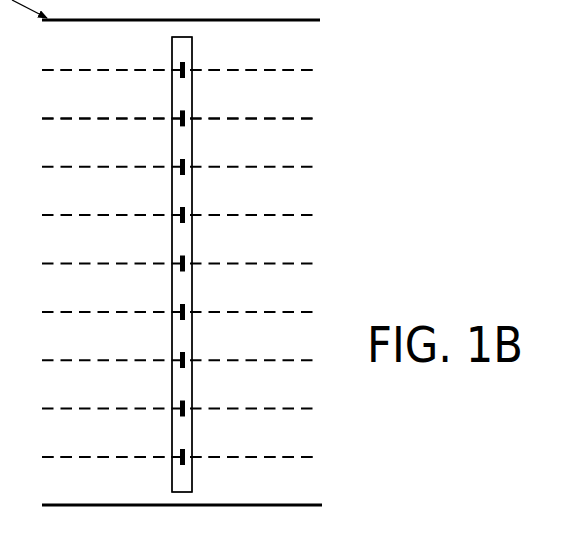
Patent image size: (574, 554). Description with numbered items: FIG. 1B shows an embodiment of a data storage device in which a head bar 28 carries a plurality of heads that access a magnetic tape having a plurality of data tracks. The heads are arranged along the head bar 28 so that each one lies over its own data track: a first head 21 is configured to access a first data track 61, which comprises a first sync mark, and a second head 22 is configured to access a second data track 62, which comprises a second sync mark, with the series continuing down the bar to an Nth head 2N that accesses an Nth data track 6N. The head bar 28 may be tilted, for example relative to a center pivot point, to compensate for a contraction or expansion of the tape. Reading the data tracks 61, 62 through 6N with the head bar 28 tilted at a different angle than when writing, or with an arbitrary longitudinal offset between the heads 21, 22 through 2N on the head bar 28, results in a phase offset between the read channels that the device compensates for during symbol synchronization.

The head bar 28 is at (170, 57).
The first head 21 is at (188, 75).
The second head 22 is at (188, 124).
The Nth head 2N is at (188, 462).
The first data track 61 is at (313, 70).
The second data track 62 is at (313, 118).
The Nth data track 6N is at (310, 458).